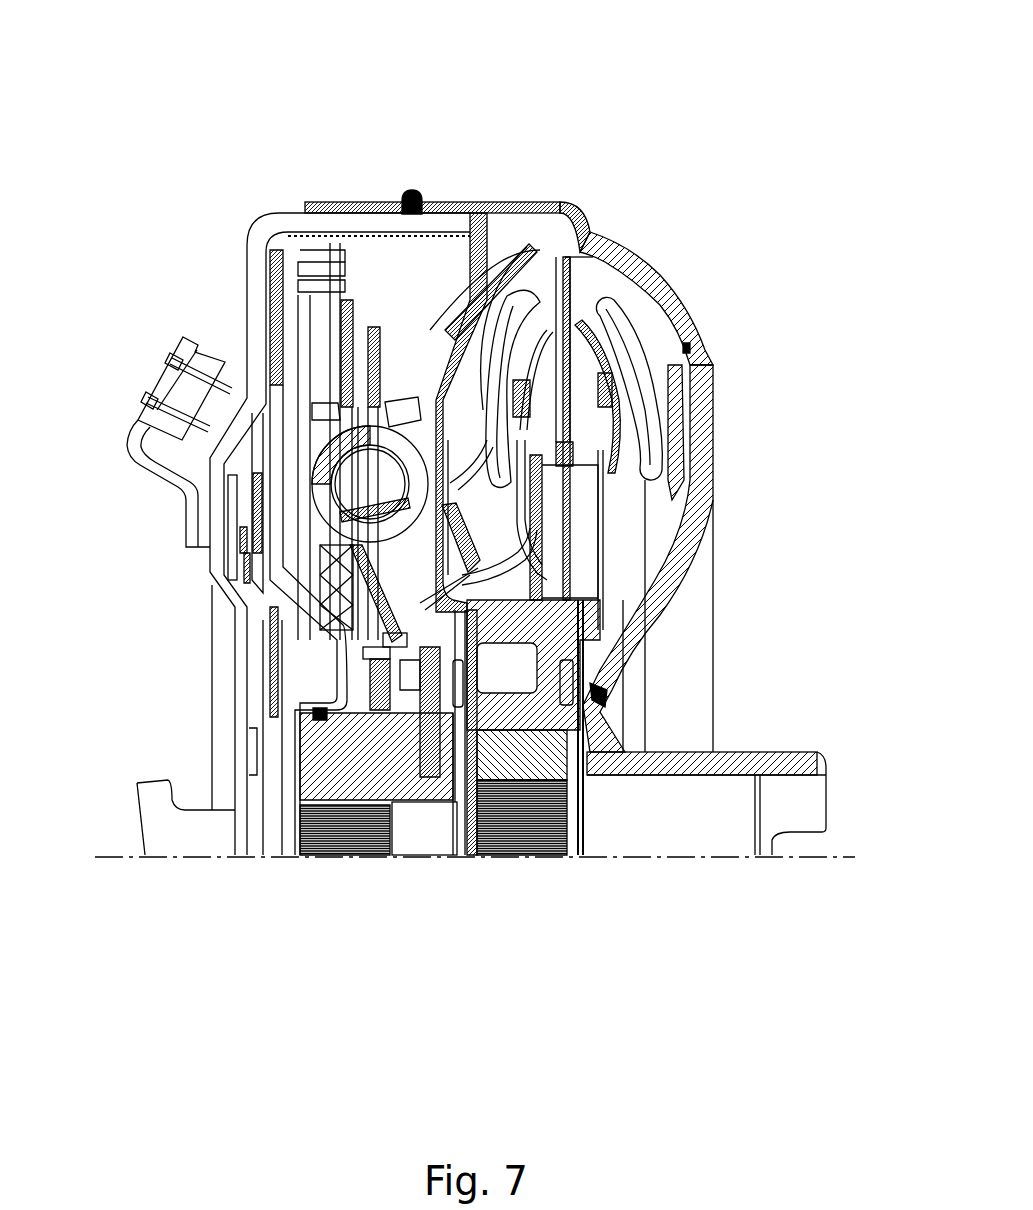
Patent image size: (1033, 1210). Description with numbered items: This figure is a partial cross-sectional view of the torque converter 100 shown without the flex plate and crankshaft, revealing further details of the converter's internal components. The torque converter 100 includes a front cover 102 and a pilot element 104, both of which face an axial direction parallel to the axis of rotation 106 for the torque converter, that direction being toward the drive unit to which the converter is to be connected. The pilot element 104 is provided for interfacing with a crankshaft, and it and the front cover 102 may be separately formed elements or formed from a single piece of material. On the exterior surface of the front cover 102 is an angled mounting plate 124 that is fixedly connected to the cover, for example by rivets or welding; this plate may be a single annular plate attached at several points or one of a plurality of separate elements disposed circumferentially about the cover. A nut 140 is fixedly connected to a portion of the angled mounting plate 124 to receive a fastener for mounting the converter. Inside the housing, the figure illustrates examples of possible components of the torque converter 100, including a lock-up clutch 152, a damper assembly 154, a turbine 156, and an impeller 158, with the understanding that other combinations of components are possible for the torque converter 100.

The torque converter 100 is at (670, 101).
The front cover 102 is at (398, 200).
The pilot element 104 is at (145, 783).
The axis of rotation 106 is at (98, 855).
The angled mounting plate 124 is at (165, 473).
The nut 140 is at (214, 350).
The lock-up clutch 152 is at (252, 268).
The damper assembly 154 is at (410, 375).
The turbine 156 is at (535, 280).
The impeller 158 is at (600, 290).